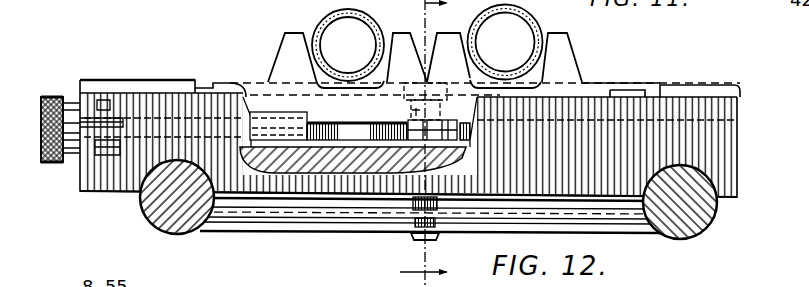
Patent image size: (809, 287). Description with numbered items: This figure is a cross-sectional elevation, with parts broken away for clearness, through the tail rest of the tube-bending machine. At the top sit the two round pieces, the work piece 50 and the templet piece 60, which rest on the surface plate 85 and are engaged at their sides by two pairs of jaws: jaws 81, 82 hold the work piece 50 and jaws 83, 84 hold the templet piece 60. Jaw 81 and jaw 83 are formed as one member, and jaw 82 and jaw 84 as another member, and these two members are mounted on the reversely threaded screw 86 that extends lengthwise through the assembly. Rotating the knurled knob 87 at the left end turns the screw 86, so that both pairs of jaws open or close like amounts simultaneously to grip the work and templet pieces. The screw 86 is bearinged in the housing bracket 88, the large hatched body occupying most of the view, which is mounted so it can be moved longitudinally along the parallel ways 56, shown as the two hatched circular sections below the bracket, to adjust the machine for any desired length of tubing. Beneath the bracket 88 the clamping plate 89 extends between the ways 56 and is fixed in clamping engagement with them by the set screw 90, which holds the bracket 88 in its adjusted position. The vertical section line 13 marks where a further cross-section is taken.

The section line 13- 13 is at (412, 143).
The work piece 50 is at (521, 8).
The parallel ways 56 is at (710, 224).
The templet piece 60 is at (341, 9).
The jaw 81 is at (459, 24).
The jaw 82 is at (567, 35).
The jaw 83 is at (280, 45).
The jaw 84 is at (407, 38).
The surface plate 85 is at (230, 83).
The reversely threaded screw 86 is at (333, 123).
The knurled knob 87 is at (53, 97).
The housing bracket 88 is at (737, 148).
The clamping plate 89 is at (281, 228).
The set screw 90 is at (413, 237).